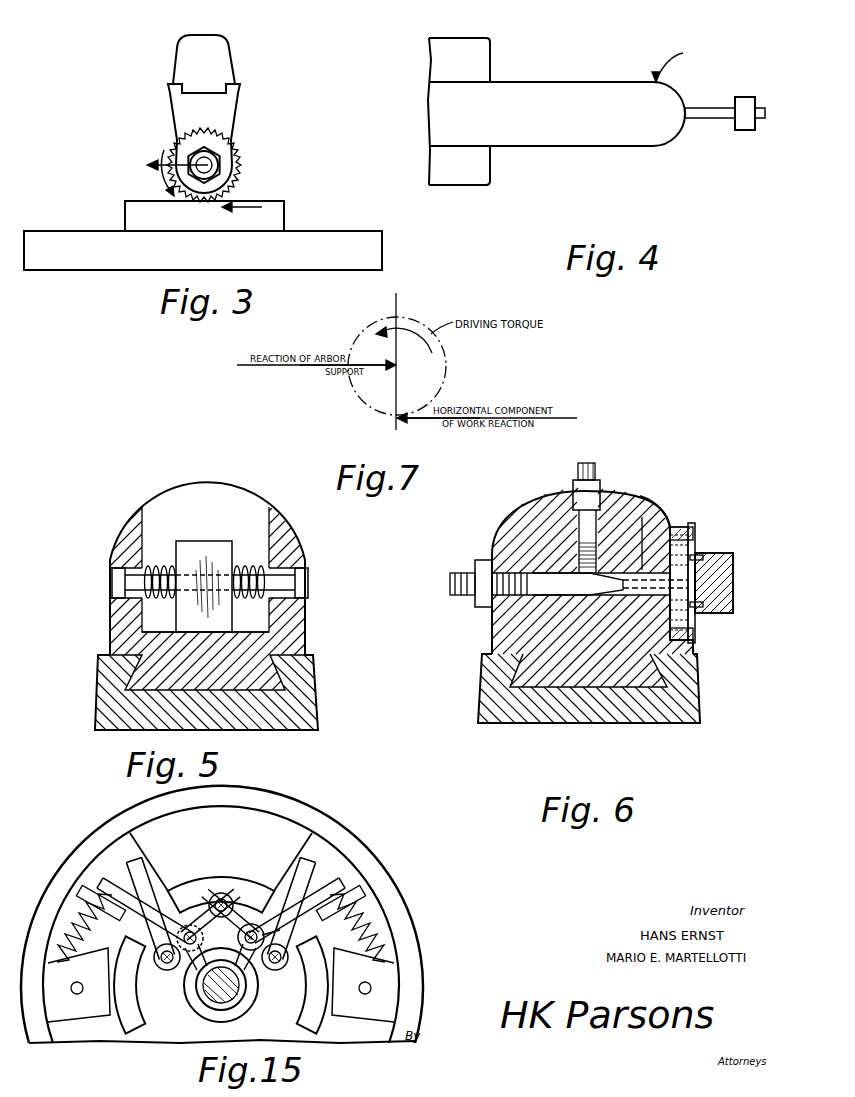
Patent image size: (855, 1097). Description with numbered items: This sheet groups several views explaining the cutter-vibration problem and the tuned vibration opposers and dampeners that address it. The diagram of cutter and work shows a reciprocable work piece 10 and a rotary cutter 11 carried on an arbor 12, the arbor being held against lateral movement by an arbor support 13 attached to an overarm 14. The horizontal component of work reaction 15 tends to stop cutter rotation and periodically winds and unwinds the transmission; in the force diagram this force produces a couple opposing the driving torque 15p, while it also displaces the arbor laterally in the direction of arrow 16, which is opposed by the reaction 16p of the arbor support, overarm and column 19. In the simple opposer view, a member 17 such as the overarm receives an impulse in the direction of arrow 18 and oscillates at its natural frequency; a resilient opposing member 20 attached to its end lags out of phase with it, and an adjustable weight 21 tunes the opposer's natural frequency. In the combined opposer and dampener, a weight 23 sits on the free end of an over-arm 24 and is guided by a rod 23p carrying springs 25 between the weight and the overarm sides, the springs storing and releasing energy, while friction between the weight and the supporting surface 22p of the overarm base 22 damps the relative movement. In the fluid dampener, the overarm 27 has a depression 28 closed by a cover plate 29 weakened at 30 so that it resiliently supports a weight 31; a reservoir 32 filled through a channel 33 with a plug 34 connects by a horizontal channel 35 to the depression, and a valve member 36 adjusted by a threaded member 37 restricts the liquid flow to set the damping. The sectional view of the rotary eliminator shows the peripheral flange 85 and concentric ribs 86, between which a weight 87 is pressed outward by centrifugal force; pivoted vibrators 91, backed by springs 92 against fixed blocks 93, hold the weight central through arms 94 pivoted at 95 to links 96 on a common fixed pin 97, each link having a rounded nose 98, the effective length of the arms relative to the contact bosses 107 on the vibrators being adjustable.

In FIG. 3, the work piece 10 is at (248, 203).
In FIG. 3, the rotary cutter 11 is at (244, 175).
In FIG. 3, the arbor 12 is at (205, 163).
In FIG. 3, the arbor support 13 is at (228, 110).
In FIG. 3, the overarm 14 is at (228, 62).
In FIG. 3, the horizontal component of work reaction 15 is at (240, 207).
In FIG. 7, the horizontal component of work reaction 15 is at (403, 420).
In FIG. 3, the direction of lateral arbor displacement 16 is at (167, 155).
In FIG. 7, the driving torque 15p is at (400, 328).
In FIG. 7, the reaction of arbor support 16p is at (383, 363).
In FIG. 4, the member 17 is at (572, 90).
In FIG. 4, the direction of disturbing impulse 18 is at (674, 63).
In FIG. 4, the column 19 is at (492, 52).
In FIG. 4, the opposing member 20 is at (703, 107).
In FIG. 4, the weight 21 is at (745, 97).
In FIG. 5, the base member 22 is at (303, 628).
In FIG. 5, the supporting surface 22p is at (255, 630).
In FIG. 5, the weight 23 is at (190, 547).
In FIG. 5, the rod 23p is at (303, 567).
In FIG. 5, the over-arm 24 is at (120, 546).
In FIG. 5, the springs 25 is at (155, 563).
In FIG. 6, the overarm 27 is at (645, 518).
In FIG. 6, the depression 28 is at (673, 527).
In FIG. 6, the cover plate 29 is at (695, 540).
In FIG. 6, the weakened portion 30 is at (697, 557).
In FIG. 6, the weight 31 is at (733, 571).
In FIG. 6, the reservoir 32 is at (638, 507).
In FIG. 6, the channel 33 is at (620, 490).
In FIG. 6, the plug 34 is at (596, 467).
In FIG. 6, the horizontal channel 35 is at (660, 520).
In FIG. 6, the valve member 36 is at (550, 580).
In FIG. 6, the threaded member 37 is at (462, 572).
In FIG. 15, the peripheral flange 85 is at (348, 845).
In FIG. 15, the ribs 86 is at (248, 890).
In FIG. 15, the weight 87 is at (280, 832).
In FIG. 15, the pivoted vibrators 91 is at (80, 887).
In FIG. 15, the springs 92 is at (68, 912).
In FIG. 15, the fixed blocks 93 is at (48, 970).
In FIG. 15, the arms 94 is at (118, 870).
In FIG. 15, the pivots 95 is at (252, 950).
In FIG. 15, the links 96 is at (238, 922).
In FIG. 15, the fixed pin 97 is at (221, 893).
In FIG. 15, the rounded nose 98 is at (250, 995).
In FIG. 15, the contact bosses 107 is at (283, 930).